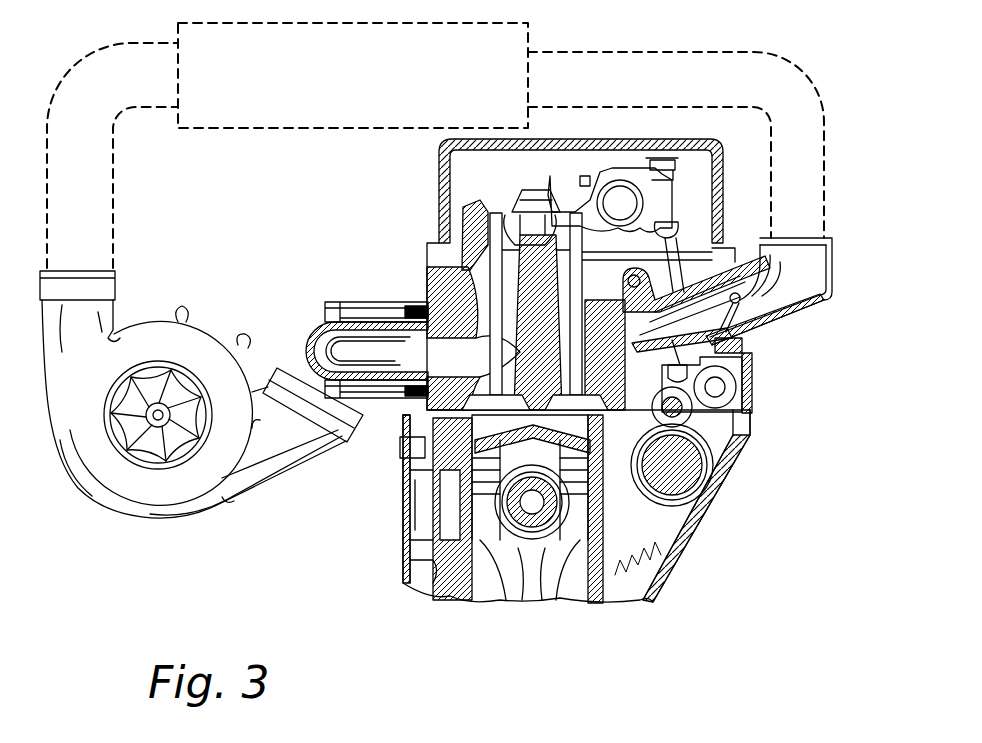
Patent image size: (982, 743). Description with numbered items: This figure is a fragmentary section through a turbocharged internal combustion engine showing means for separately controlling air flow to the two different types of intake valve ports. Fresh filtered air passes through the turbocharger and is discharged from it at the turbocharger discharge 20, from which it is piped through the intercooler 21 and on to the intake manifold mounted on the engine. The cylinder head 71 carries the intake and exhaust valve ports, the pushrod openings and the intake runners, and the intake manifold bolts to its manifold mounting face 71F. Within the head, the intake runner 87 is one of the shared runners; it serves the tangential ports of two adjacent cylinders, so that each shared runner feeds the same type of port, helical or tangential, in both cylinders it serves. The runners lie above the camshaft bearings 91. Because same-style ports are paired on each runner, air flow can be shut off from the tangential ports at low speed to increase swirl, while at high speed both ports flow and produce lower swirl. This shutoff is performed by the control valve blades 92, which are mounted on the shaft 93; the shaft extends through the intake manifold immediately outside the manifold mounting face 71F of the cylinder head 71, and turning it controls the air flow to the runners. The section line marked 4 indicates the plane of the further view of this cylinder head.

The turbocharger discharge 20 is at (115, 270).
The intercooler 21 is at (270, 128).
The cylinder head 71 is at (443, 292).
The manifold mounting face 71F is at (739, 245).
The section line 4- 4 is at (500, 372).
The intake runner 87 is at (735, 325).
The control valve blades 92 is at (775, 300).
The shaft 93 is at (775, 312).
The camshaft bearings 91 is at (706, 452).